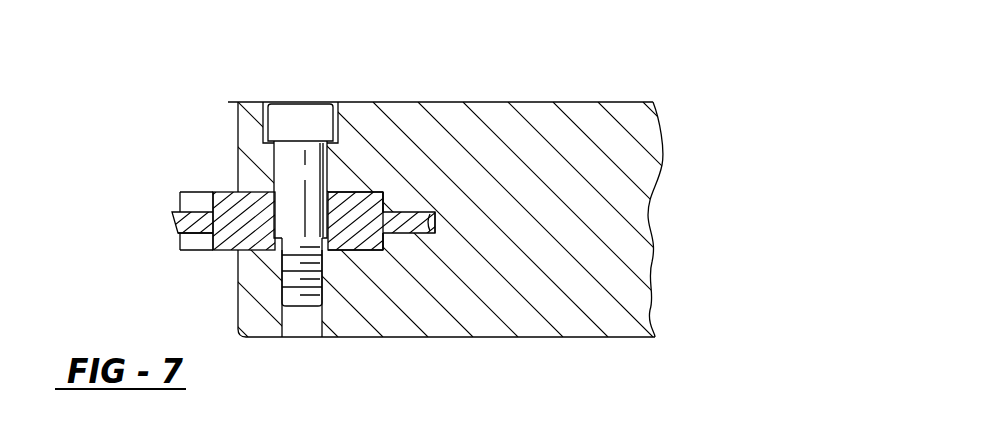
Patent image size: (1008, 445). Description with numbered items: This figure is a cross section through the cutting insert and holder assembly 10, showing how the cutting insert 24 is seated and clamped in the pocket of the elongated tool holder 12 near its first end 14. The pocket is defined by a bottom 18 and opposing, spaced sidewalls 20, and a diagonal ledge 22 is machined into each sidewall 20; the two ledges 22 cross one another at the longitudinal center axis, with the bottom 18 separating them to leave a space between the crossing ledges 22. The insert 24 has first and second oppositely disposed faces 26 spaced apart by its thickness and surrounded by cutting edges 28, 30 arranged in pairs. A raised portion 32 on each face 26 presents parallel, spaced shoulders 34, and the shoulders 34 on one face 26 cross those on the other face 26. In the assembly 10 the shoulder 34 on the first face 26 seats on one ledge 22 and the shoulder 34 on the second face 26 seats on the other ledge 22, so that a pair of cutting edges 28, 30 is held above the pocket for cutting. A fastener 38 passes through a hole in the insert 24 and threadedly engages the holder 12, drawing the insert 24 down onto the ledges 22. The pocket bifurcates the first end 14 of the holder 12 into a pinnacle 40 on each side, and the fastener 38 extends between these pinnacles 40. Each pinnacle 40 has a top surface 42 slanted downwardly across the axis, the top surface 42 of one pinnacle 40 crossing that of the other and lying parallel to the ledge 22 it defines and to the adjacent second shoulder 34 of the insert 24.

The cutting insert and holder assembly 10 is at (605, 93).
The tool holder 12 is at (603, 337).
The first end 14 is at (413, 102).
The bottom 18 is at (434, 222).
The sidewalls 20 is at (360, 196).
The diagonal ledge 22 is at (384, 196).
The cutting insert 24 is at (140, 164).
The faces 26 is at (178, 192).
The first cutting edge 28 is at (172, 213).
The second cutting edge 30 is at (178, 232).
The raised portion 32 is at (203, 192).
The shoulders 34 is at (227, 192).
The fastener 38 is at (310, 101).
The pinnacle 40 is at (256, 100).
The top surface 42 is at (233, 103).